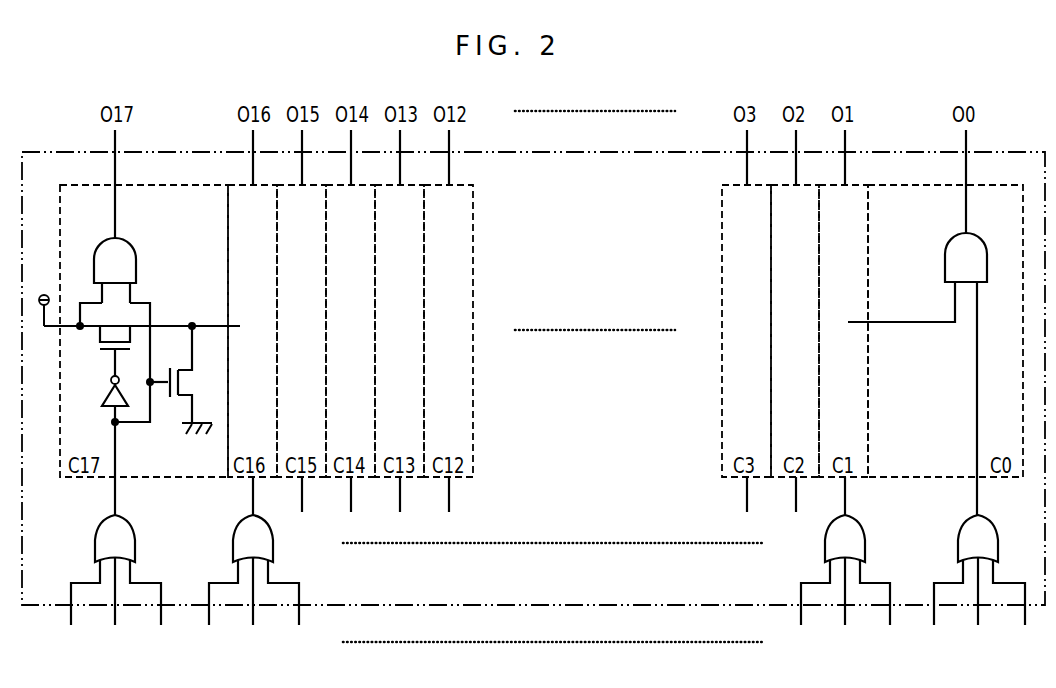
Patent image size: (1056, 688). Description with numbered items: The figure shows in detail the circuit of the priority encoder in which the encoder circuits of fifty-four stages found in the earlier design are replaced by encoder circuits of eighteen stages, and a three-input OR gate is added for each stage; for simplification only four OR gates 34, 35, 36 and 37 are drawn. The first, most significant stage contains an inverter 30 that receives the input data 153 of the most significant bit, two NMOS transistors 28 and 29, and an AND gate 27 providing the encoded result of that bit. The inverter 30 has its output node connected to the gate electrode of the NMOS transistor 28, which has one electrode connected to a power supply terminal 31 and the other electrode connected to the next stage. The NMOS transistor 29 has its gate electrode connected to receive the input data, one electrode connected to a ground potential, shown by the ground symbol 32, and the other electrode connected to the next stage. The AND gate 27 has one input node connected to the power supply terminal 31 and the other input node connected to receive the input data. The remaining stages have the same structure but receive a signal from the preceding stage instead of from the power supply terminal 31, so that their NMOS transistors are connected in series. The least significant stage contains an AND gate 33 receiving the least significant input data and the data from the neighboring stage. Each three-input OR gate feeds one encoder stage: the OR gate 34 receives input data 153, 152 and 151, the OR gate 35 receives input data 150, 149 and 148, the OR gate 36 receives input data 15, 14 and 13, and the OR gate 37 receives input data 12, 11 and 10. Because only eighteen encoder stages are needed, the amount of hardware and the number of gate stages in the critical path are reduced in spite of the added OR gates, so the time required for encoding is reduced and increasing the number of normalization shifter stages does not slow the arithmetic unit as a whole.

The AND gate 27 is at (127, 253).
The NMOS transistor 28 is at (100, 350).
The NMOS transistor 29 is at (189, 381).
The inverter 30 is at (103, 397).
The power supply terminal 31 is at (44, 294).
The ground 32 is at (193, 437).
The AND gate 33 is at (953, 256).
The OR gate 34 is at (108, 535).
The OR gate 35 is at (241, 535).
The OR gate 36 is at (857, 534).
The OR gate 37 is at (990, 534).
The input terminal 10 is at (1014, 609).
The input terminal 11 is at (980, 607).
The input terminal 12 is at (944, 609).
The input terminal 13 is at (880, 609).
The input terminal 14 is at (845, 607).
The input terminal 15 is at (810, 609).
The input terminal 148 is at (291, 609).
The input terminal 149 is at (252, 607).
The input terminal 150 is at (215, 609).
The input terminal 151 is at (152, 609).
The input terminal 152 is at (114, 607).
The input data 153 is at (77, 609).